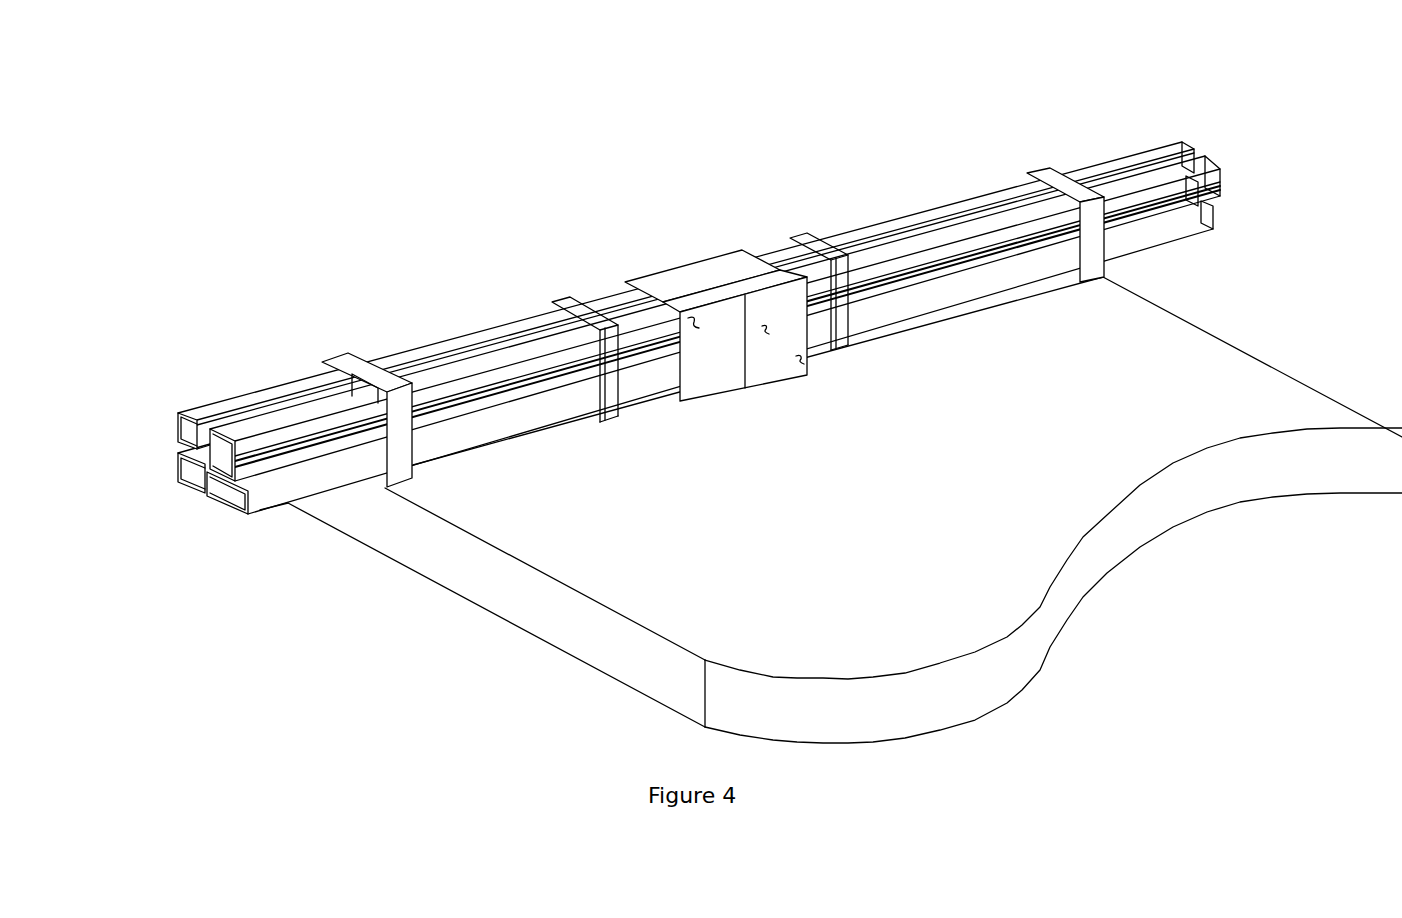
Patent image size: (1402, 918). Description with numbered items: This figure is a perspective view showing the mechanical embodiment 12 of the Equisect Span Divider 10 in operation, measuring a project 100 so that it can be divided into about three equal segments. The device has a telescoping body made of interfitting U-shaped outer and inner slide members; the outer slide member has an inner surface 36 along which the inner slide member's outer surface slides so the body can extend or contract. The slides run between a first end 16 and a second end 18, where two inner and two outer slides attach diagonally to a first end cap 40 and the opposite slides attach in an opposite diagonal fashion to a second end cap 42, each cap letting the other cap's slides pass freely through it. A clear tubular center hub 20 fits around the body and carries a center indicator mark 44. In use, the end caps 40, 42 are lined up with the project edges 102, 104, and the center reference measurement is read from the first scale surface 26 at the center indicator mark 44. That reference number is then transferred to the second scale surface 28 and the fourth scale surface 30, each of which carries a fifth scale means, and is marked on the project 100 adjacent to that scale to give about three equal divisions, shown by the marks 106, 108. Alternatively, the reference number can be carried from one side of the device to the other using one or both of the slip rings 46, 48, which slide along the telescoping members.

The Equisect Span Divider 10 is at (713, 365).
The mechanical embodiment 12 is at (713, 391).
The first end 16 is at (213, 512).
The second end 18 is at (1222, 176).
The center hub 20 is at (716, 285).
The first scale surface 26 is at (487, 340).
The second scale surface 28 is at (527, 413).
The fourth scale surface 30 is at (207, 402).
The inner surface 36 is at (187, 433).
The first end cap 40 is at (397, 461).
The second end cap 42 is at (1092, 270).
The center indicator mark 44 is at (700, 268).
The slip ring 46 is at (557, 300).
The slip ring 48 is at (808, 235).
The project 100 is at (831, 509).
The project edge 102 is at (1184, 316).
The project edge 104 is at (463, 565).
The mark 106 is at (657, 431).
The mark 108 is at (896, 361).